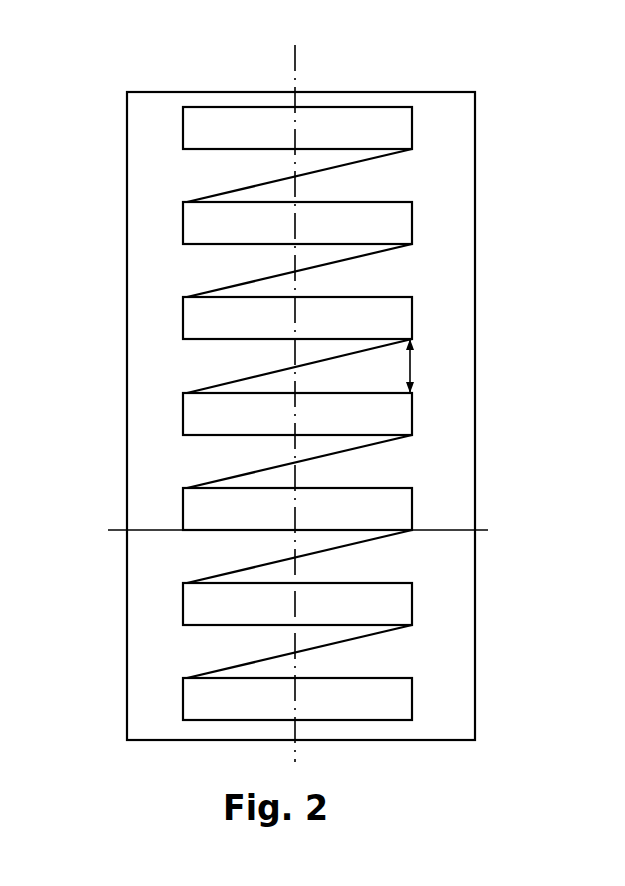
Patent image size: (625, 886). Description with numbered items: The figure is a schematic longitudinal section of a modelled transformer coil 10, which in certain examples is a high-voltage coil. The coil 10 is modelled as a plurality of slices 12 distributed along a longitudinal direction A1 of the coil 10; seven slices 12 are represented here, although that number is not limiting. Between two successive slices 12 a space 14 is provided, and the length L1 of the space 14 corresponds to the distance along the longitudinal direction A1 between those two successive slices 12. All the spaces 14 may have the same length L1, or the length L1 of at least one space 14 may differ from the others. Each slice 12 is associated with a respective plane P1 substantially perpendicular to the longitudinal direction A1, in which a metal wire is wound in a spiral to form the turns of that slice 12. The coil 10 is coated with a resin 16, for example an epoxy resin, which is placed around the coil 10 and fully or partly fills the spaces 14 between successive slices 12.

The coil 10 is at (250, 379).
The slice 12 is at (205, 223).
The space 14 is at (205, 363).
The resin 16 is at (145, 445).
The longitudinal direction A1 is at (295, 389).
The plane P1 is at (277, 528).
The length L1 is at (427, 366).